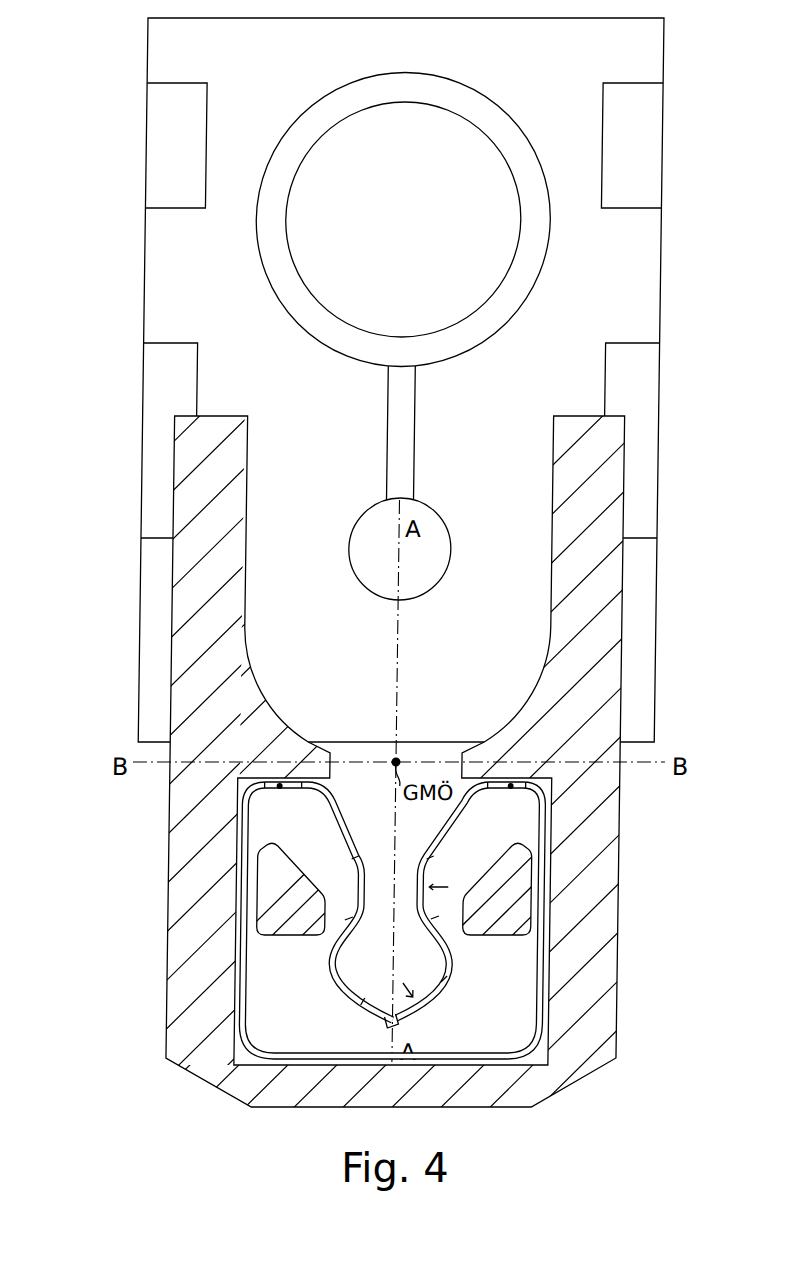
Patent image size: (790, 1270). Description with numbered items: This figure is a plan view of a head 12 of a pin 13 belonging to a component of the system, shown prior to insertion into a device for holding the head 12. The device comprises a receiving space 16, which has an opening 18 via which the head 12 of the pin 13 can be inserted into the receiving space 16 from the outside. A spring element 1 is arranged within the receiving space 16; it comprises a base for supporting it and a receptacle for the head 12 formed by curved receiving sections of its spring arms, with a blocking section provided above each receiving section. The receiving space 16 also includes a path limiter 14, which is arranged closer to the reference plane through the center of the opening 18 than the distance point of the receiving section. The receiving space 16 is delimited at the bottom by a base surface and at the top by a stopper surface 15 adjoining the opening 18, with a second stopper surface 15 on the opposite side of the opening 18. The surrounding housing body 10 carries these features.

The spring element 1 is at (562, 932).
The housing 10 is at (625, 1047).
The head 12 is at (406, 542).
The pin 13 is at (394, 417).
The path limiter 14 is at (299, 913).
The stopper surface 15 is at (290, 787).
The receiving space 16 is at (531, 983).
The opening 18 is at (355, 758).